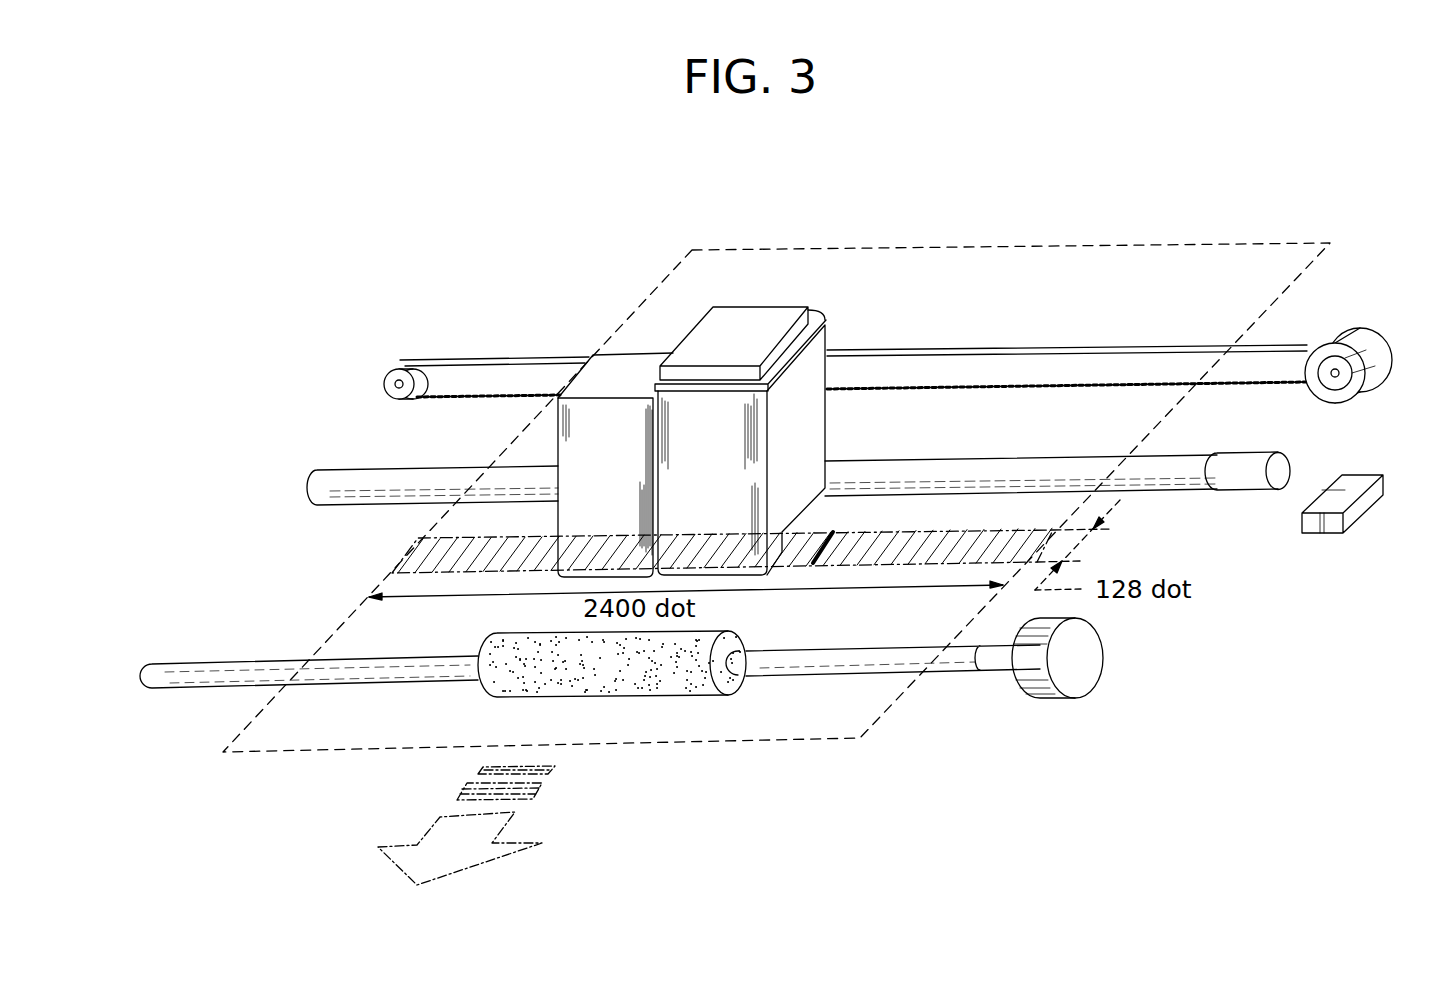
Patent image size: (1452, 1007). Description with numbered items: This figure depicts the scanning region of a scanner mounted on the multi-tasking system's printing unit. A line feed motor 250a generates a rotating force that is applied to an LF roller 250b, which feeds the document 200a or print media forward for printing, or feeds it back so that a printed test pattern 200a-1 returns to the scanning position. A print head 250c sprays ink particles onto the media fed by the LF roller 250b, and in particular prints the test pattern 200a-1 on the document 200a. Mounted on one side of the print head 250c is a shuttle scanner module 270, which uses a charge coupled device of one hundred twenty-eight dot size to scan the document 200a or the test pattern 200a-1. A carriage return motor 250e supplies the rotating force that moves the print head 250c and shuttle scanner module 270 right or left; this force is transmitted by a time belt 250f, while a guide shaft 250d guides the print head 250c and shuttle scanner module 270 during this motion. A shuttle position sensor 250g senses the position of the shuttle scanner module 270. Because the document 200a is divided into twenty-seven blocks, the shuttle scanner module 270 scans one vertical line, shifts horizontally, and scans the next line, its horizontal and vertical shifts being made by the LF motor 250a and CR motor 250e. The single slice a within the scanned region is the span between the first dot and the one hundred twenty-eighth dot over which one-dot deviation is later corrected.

The document 200a is at (397, 727).
The test pattern 200a-1 is at (412, 553).
The single slice a is at (818, 556).
The line feed (LF) motor 250a is at (1098, 676).
The LF roller 250b is at (600, 697).
The print head 250c is at (763, 307).
The guide shaft 250d is at (1183, 493).
The carriage return (CR) motor 250e is at (1378, 332).
The time belt 250f is at (1012, 346).
The shuttle position sensor 250g is at (1320, 534).
The shuttle scanner module 270 is at (625, 345).